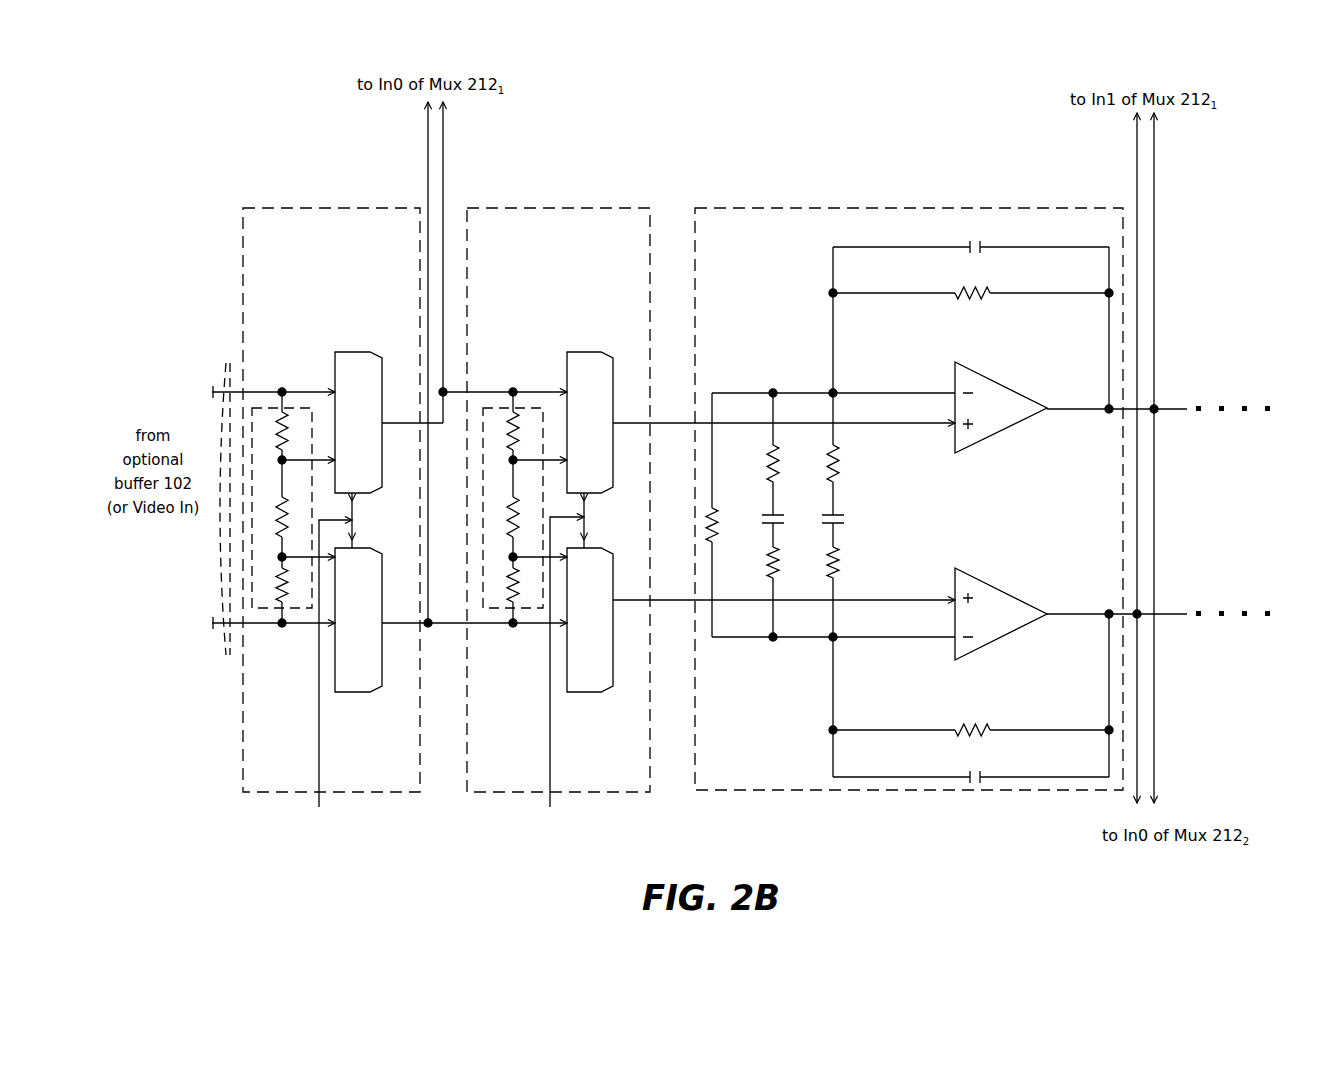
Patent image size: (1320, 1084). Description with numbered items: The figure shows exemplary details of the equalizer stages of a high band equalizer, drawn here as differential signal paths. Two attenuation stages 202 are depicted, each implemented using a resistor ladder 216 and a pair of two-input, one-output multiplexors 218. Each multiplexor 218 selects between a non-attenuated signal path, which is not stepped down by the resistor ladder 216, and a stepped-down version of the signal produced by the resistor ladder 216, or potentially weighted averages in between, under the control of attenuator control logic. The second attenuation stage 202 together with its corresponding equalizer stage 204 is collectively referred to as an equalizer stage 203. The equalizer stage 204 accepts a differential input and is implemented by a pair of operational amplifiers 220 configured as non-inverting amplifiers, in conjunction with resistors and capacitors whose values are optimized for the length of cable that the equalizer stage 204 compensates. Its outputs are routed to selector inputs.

The attenuation stage 202 is at (338, 205).
The equalizer stage 203 is at (1123, 147).
The equalizer stage 204 is at (932, 205).
The resistor ladder 216 is at (266, 390).
The multiplexor 218 is at (342, 350).
The operational amplifier 220 is at (970, 368).